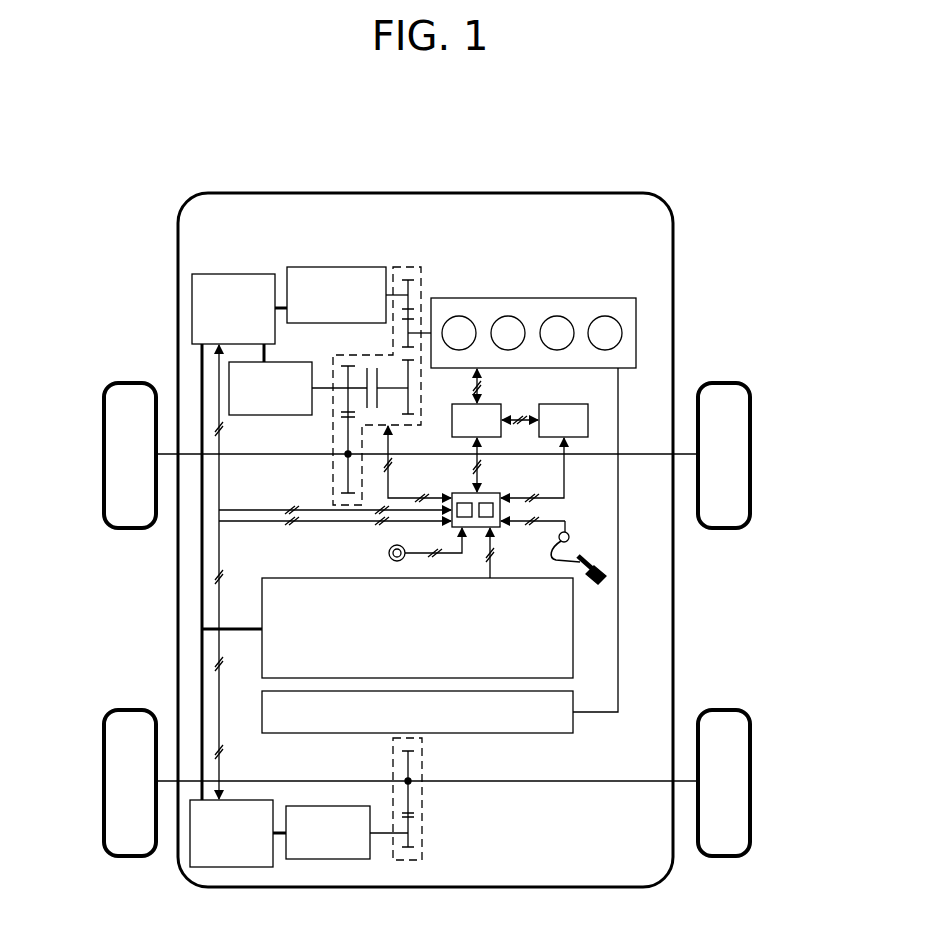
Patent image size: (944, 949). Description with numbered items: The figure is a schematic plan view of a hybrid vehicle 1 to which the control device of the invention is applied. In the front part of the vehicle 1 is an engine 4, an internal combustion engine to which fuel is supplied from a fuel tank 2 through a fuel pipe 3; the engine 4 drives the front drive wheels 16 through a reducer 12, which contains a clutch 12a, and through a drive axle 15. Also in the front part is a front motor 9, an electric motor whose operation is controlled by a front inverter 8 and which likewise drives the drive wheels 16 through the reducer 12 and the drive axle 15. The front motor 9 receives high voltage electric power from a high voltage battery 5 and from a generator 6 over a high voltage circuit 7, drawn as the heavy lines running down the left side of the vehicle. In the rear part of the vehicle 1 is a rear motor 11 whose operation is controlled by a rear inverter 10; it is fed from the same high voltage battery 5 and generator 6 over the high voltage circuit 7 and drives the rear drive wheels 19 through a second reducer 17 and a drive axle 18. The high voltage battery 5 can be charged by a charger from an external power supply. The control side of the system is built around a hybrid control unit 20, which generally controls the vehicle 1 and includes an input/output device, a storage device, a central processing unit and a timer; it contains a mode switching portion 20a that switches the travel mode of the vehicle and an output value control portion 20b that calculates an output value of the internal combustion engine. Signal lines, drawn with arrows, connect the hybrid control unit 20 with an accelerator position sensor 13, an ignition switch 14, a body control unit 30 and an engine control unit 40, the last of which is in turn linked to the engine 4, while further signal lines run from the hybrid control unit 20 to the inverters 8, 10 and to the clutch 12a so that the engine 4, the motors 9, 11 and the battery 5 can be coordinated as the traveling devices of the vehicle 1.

The vehicle 1 is at (627, 163).
The fuel tank 2 is at (303, 734).
The fuel pipe 3 is at (620, 598).
The engine 4 is at (600, 297).
The high voltage battery 5 is at (292, 577).
The generator 6 is at (362, 266).
The high voltage circuit 7 is at (283, 306).
The front inverter 8 is at (222, 273).
The front motor 9 is at (285, 416).
The rear inverter 10 is at (248, 868).
The rear motor 11 is at (350, 860).
The reducer 12 is at (413, 265).
The clutch 12a is at (380, 366).
The accelerator position sensor 13 is at (568, 532).
The ignition switch 14 is at (396, 547).
The drive axle 15 is at (645, 457).
The drive wheels 16 is at (104, 421).
The reducer 17 is at (422, 800).
The drive axle 18 is at (573, 783).
The drive wheels 19 is at (104, 751).
The hybrid control unit 20 is at (490, 492).
The mode switching portion 20a is at (458, 503).
The output value control portion 20b is at (490, 518).
The body control unit 30 is at (574, 403).
The engine control unit 40 is at (494, 403).